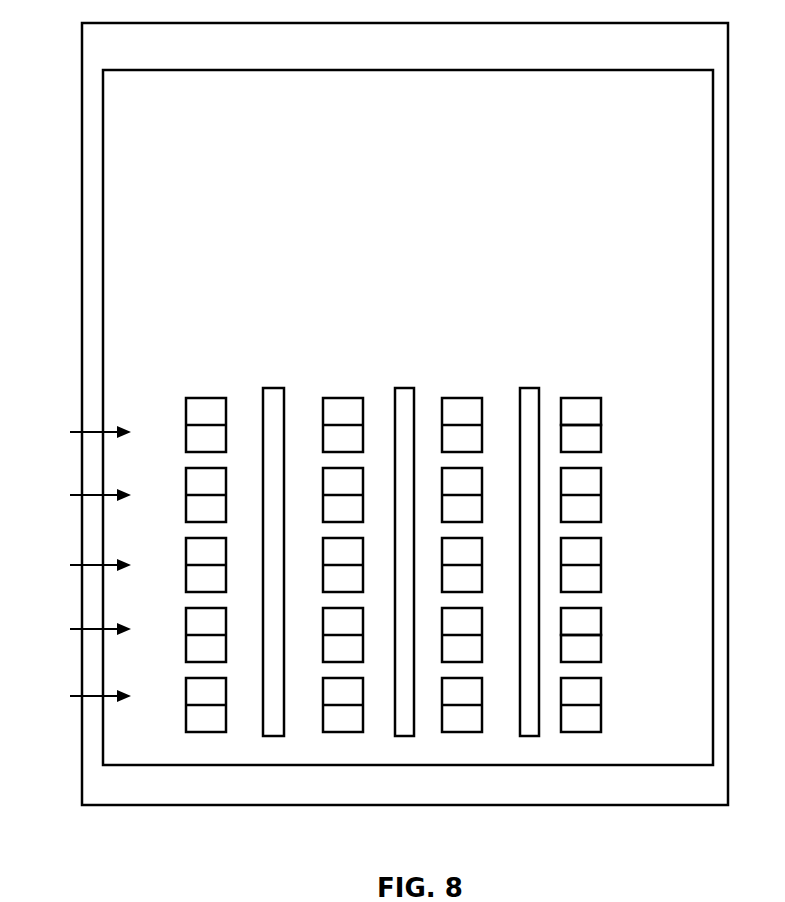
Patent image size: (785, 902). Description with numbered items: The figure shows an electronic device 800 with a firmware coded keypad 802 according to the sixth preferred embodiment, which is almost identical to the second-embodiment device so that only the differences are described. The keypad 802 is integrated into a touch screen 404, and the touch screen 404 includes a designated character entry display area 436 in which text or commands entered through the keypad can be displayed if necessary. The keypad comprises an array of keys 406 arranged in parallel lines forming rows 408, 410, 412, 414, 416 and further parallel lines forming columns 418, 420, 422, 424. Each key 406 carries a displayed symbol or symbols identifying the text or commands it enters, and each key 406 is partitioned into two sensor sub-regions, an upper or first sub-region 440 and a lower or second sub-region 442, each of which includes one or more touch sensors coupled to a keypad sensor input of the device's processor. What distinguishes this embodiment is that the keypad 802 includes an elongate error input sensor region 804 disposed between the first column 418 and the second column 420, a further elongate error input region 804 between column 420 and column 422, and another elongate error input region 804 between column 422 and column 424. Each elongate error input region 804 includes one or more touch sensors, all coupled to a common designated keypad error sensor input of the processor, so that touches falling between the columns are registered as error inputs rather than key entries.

The electronic device 800 is at (155, 881).
The firmware coded keypad 802 is at (616, 748).
The touch screen 404 is at (426, 276).
The character entry display area 436 is at (219, 192).
The row 408 is at (79, 432).
The row 410 is at (79, 495).
The row 412 is at (79, 565).
The row 414 is at (79, 629).
The row 416 is at (79, 696).
The column 418 is at (208, 388).
The column 420 is at (345, 388).
The column 422 is at (462, 388).
The column 424 is at (582, 388).
The first sub-region 440 is at (601, 417).
The second sub-region 442 is at (600, 448).
The key 406 is at (600, 494).
The elongate error input sensor region 804 is at (272, 732).